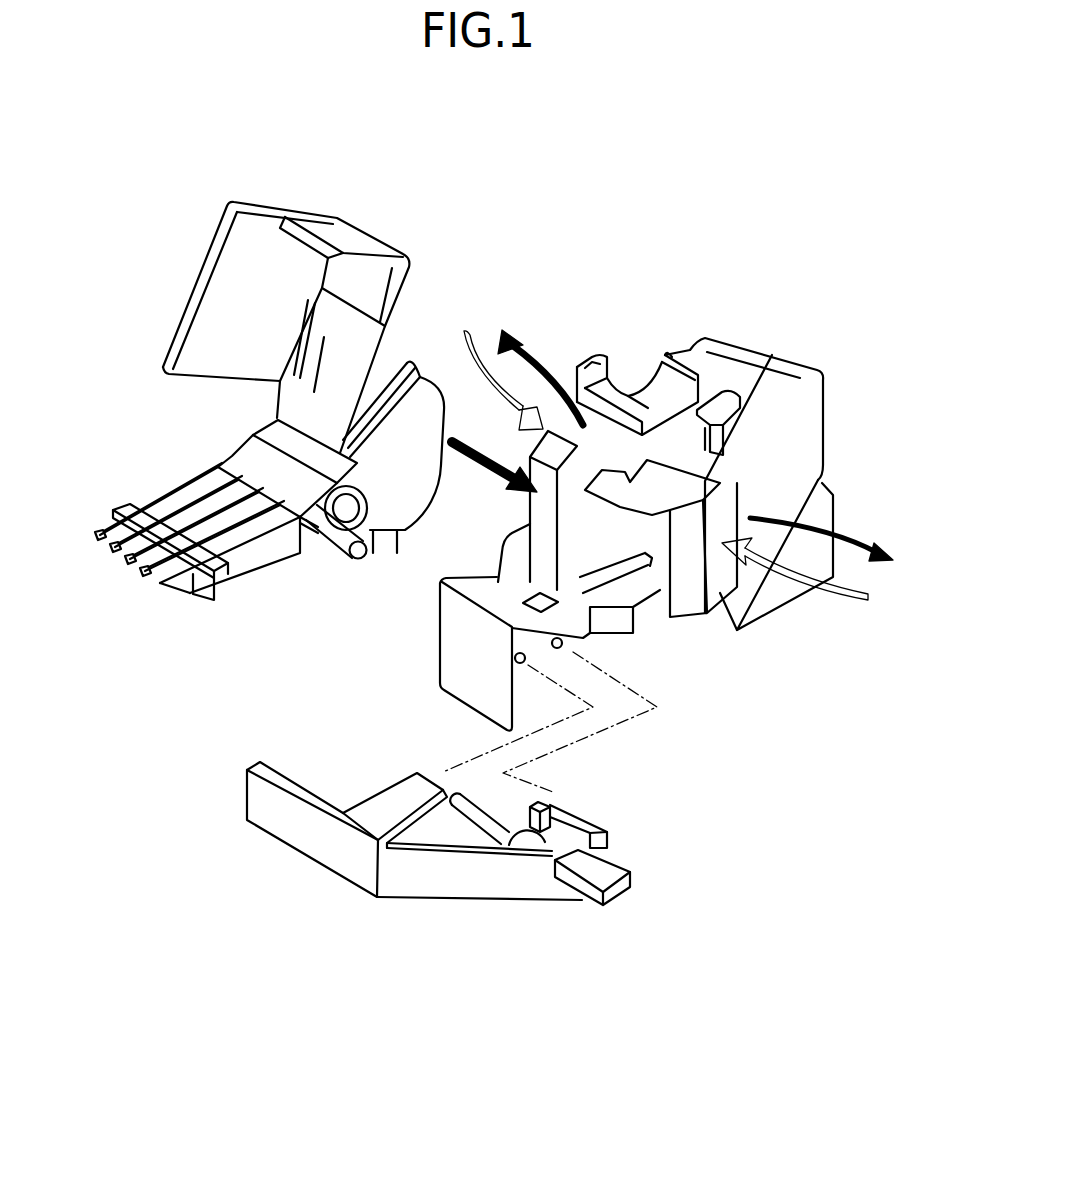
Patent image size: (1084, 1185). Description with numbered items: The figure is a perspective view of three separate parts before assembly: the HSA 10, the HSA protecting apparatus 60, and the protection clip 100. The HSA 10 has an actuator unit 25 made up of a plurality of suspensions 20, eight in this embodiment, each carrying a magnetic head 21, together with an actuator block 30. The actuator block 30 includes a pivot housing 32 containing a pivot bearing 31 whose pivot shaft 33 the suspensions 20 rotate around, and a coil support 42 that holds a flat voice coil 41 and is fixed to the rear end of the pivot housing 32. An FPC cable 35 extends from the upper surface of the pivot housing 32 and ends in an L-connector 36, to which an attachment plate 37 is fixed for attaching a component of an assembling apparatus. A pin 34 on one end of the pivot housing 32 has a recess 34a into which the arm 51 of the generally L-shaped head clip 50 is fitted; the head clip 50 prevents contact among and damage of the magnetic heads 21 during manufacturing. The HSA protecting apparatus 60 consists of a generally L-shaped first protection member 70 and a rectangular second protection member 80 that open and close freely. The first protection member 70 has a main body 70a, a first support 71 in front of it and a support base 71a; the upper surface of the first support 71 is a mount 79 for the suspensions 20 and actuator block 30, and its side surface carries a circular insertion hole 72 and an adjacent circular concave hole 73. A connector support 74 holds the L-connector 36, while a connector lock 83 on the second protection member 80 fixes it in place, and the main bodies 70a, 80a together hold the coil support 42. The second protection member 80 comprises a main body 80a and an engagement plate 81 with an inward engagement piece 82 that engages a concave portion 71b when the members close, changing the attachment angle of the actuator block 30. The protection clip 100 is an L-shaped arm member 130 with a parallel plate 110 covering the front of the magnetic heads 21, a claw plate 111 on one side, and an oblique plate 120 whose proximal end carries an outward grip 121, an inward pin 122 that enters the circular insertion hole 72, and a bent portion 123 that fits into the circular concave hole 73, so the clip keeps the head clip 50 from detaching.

The HSA 10 is at (195, 163).
The suspensions 20 is at (98, 532).
The magnetic heads 21 is at (97, 544).
The actuator unit 25 is at (160, 510).
The actuator block 30 is at (368, 558).
The pivot bearing 31 is at (373, 518).
The pivot housing 32 is at (240, 460).
The pivot shaft 33 is at (348, 512).
The pin 34 is at (341, 559).
The recess 34a is at (300, 530).
The FPC cable 35 is at (300, 390).
The L-connector 36 is at (357, 237).
The attachment plate 37 is at (253, 214).
The voice coil 41 is at (410, 523).
The coil support 42 is at (417, 363).
The head clip 50 is at (241, 606).
The arm 51 is at (277, 557).
The HSA protecting apparatus 60 is at (750, 318).
The first protection member 70 is at (700, 324).
The main body 70a is at (637, 380).
The first support 71 is at (440, 682).
The support base 71a is at (762, 603).
The concave portion 71b is at (563, 462).
The circular insertion hole 72 is at (524, 664).
The circular concave hole 73 is at (564, 644).
The connector support 74 is at (596, 348).
The mount 79 is at (440, 625).
The second protection member 80 is at (798, 482).
The main body 80a is at (818, 455).
The engagement plate 81 is at (688, 500).
The engagement piece 82 is at (617, 488).
The connector lock 83 is at (742, 398).
The protection clip 100 is at (471, 826).
The parallel plate 110 is at (263, 820).
The claw plate 111 is at (373, 807).
The oblique plate 120 is at (530, 892).
The grip 121 is at (612, 870).
The pin 122 is at (477, 812).
The bent portion 123 is at (567, 815).
The arm member 130 is at (333, 858).